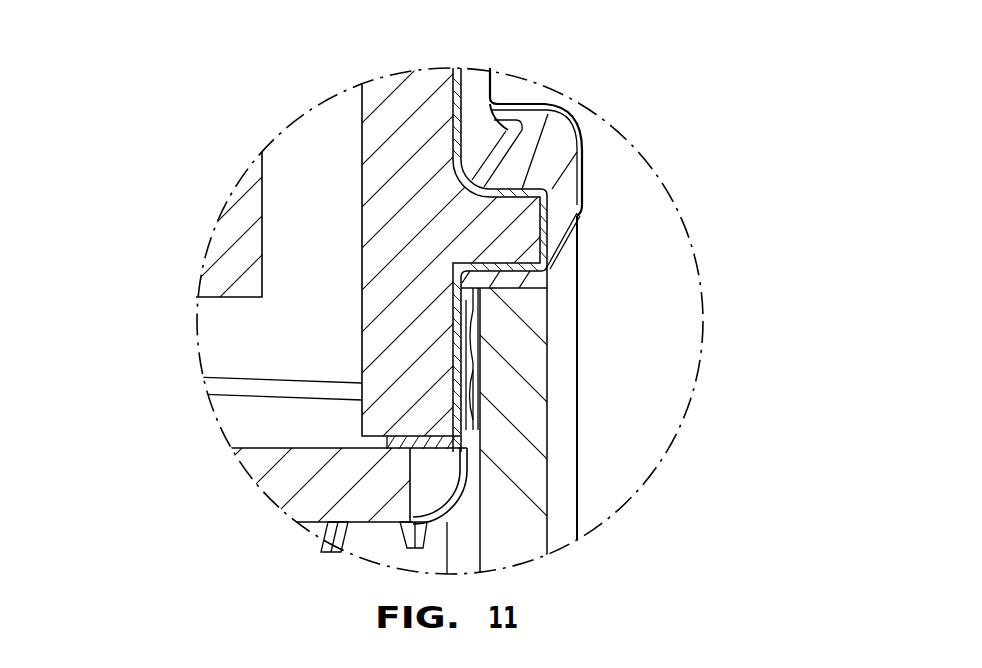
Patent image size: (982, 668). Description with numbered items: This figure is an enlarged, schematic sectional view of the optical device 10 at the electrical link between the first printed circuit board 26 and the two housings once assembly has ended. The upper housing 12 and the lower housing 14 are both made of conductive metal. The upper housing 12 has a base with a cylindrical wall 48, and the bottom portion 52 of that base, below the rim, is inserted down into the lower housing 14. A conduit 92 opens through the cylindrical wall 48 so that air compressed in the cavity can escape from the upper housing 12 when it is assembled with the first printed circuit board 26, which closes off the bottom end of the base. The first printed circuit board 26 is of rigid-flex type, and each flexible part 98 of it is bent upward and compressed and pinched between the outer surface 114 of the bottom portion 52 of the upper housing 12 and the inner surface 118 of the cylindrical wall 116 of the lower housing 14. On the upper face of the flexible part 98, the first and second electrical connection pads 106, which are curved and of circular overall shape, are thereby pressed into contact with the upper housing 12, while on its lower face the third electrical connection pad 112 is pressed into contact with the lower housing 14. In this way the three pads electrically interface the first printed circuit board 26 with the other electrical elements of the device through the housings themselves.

The optical device 10 is at (226, 139).
The upper housing 12 is at (596, 80).
The lower housing 14 is at (596, 454).
The first printed circuit board 26 is at (326, 501).
The cylindrical wall 48 is at (356, 99).
The bottom portion 52 is at (440, 358).
The conduit 92 is at (264, 463).
The flexible part 98 is at (464, 516).
The first electrical connection pad 106 is at (456, 338).
The third electrical connection pad 112 is at (481, 309).
The outer surface 114 is at (475, 405).
The cylindrical wall 116 is at (588, 306).
The inner surface 118 is at (482, 392).